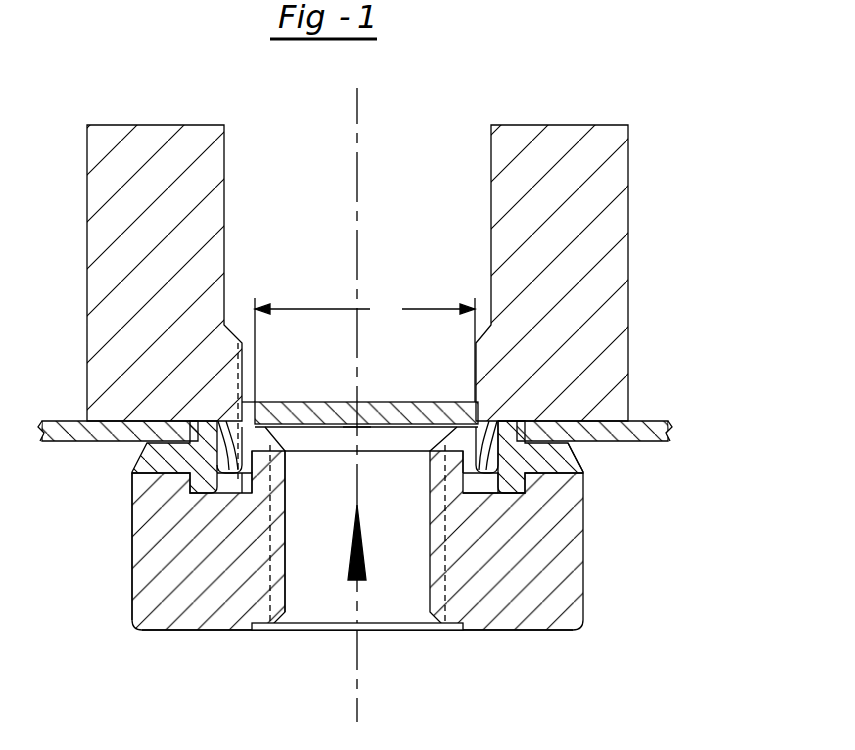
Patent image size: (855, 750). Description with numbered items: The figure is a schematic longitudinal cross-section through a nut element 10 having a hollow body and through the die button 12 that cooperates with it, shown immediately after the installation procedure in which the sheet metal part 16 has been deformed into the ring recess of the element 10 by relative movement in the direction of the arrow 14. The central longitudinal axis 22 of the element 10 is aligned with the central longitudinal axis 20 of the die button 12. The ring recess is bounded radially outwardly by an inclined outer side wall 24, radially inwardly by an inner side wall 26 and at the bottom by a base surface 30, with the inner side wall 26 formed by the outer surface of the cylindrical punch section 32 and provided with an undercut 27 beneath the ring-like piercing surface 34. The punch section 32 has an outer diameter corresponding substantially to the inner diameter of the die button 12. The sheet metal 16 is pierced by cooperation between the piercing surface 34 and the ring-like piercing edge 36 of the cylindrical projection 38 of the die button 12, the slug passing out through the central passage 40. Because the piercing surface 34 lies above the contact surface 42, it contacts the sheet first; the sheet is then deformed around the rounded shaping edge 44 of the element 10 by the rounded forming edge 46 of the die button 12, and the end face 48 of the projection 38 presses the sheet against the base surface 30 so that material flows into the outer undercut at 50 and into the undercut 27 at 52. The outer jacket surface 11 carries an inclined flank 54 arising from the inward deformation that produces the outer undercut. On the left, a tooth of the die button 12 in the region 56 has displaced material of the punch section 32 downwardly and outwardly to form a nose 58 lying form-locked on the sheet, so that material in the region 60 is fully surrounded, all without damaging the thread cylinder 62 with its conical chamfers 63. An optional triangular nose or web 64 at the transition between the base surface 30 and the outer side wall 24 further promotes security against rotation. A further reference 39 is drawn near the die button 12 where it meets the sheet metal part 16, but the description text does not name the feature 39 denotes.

The element having a hollow body 10 is at (585, 590).
The outer jacket surface 11 is at (553, 632).
The die button 12 is at (629, 184).
The arrow 14 is at (362, 605).
The sheet metal part 16 is at (668, 425).
The central longitudinal axis of the die button 20 is at (360, 110).
The central longitudinal axis of the element 22 is at (360, 665).
The outer side wall 24 is at (545, 445).
The inner side wall 26 is at (468, 425).
The undercut of the radially inner wall 27 is at (450, 450).
The base surface 30 is at (505, 500).
The cylindrical punch section 32 is at (266, 470).
The ring-like piercing surface 34 is at (455, 415).
The ring-like piercing edge 36 is at (478, 492).
The cylindrical projection 38 is at (246, 492).
The seal top 39 is at (545, 420).
The central passage 40 is at (413, 289).
The contact surface 42 is at (143, 448).
The rounded shaping edge 44 is at (595, 455).
The rounded forming edge 46 is at (494, 470).
The end face of the projecting cylindrical part 48 is at (483, 470).
The location of sheet metal flow into outer undercut 50 is at (555, 488).
The location of sheet metal flow into inner undercut 52 is at (462, 499).
The inclined flank 54 is at (130, 470).
The region of the tooth 56 is at (250, 385).
The nose 58 is at (235, 470).
The region of the undercut 60 is at (262, 478).
The thread cylinder 62 is at (287, 552).
The conical chamfers 63 is at (283, 630).
The nose or web 64 is at (155, 520).